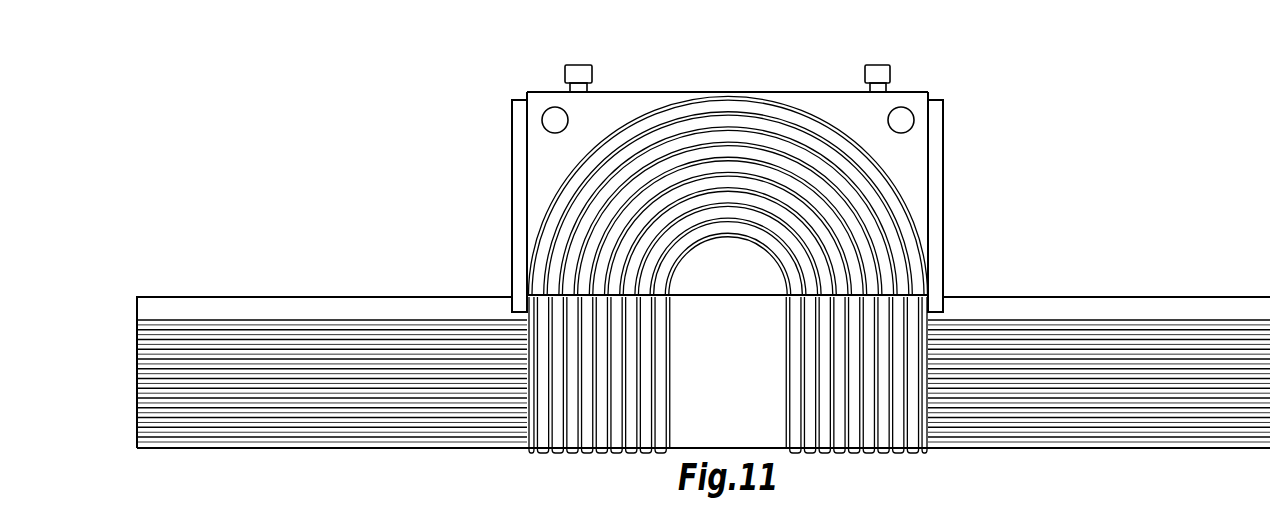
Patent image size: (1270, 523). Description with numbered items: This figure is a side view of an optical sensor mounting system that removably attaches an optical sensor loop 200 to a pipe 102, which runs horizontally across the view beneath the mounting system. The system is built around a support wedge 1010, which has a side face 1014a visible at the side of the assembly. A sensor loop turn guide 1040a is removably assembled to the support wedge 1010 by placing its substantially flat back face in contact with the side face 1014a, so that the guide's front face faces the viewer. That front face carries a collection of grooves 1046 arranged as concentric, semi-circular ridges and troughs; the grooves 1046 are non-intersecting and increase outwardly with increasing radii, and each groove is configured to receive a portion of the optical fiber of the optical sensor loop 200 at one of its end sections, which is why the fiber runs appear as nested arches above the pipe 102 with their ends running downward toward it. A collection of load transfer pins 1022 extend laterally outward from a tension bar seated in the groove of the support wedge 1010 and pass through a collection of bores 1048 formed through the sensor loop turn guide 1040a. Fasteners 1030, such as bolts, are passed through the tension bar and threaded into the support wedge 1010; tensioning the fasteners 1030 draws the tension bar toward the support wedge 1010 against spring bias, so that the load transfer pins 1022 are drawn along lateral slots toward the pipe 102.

The pipe 102 is at (1113, 389).
The optical sensor loop 200 is at (532, 430).
The support wedge 1010 is at (943, 247).
The side face 1014a is at (517, 193).
The load transfer pins 1022 is at (542, 121).
The fasteners 1030 is at (565, 75).
The sensor loop turn guide 1040a is at (918, 173).
The grooves 1046 is at (668, 459).
The bores 1048 is at (570, 125).